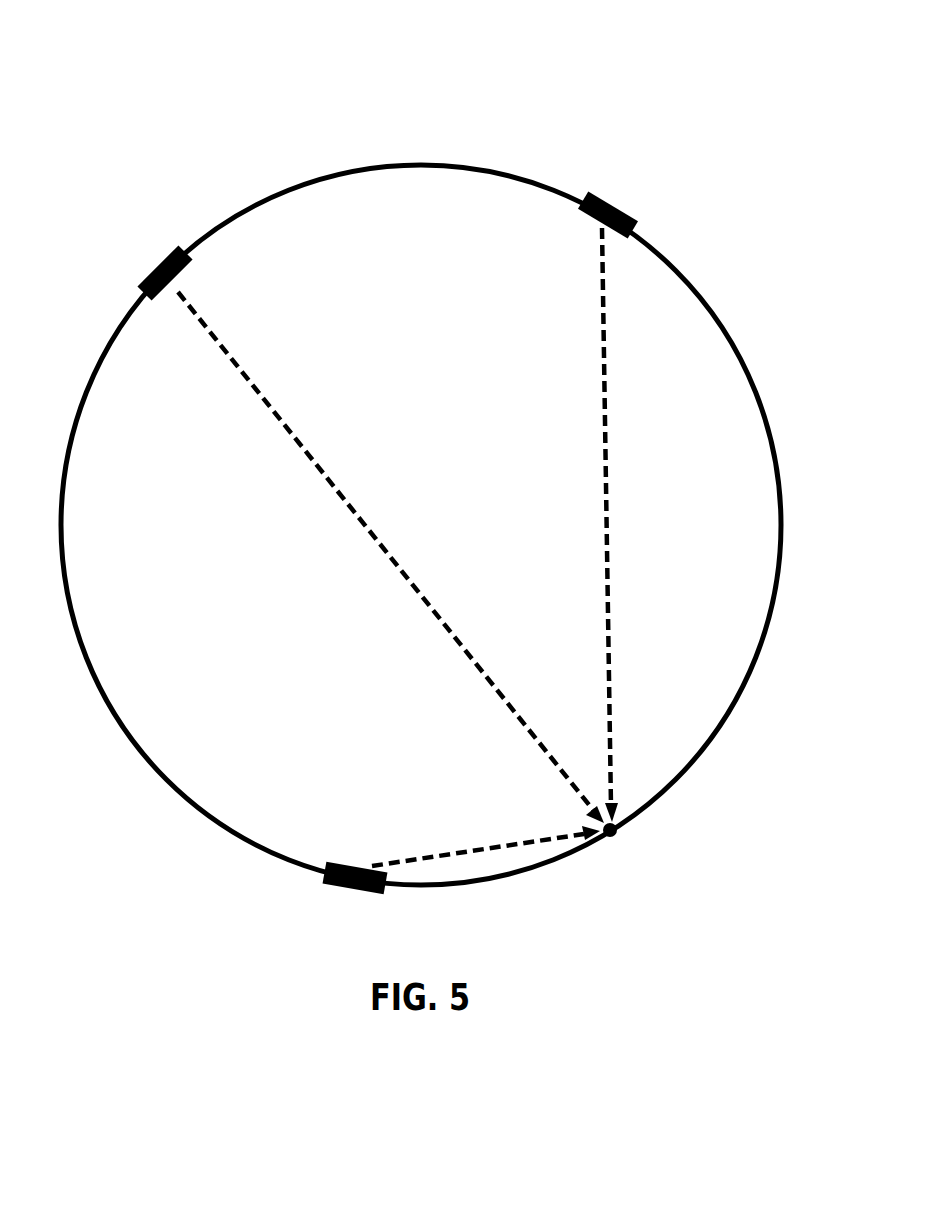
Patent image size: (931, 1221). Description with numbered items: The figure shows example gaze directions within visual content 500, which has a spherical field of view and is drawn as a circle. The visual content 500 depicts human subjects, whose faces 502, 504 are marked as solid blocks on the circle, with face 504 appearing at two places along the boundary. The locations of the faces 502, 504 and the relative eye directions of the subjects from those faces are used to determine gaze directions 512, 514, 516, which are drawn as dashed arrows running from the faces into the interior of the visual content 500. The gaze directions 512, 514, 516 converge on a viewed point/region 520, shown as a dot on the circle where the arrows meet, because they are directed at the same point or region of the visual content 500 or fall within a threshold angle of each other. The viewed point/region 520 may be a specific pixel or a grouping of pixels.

The visual content 500 is at (435, 103).
The face 502 is at (633, 202).
The face 504 is at (222, 576).
The gaze direction 512 is at (499, 525).
The gaze direction 514 is at (350, 557).
The gaze direction 516 is at (467, 829).
The viewed point/region 520 is at (770, 1000).